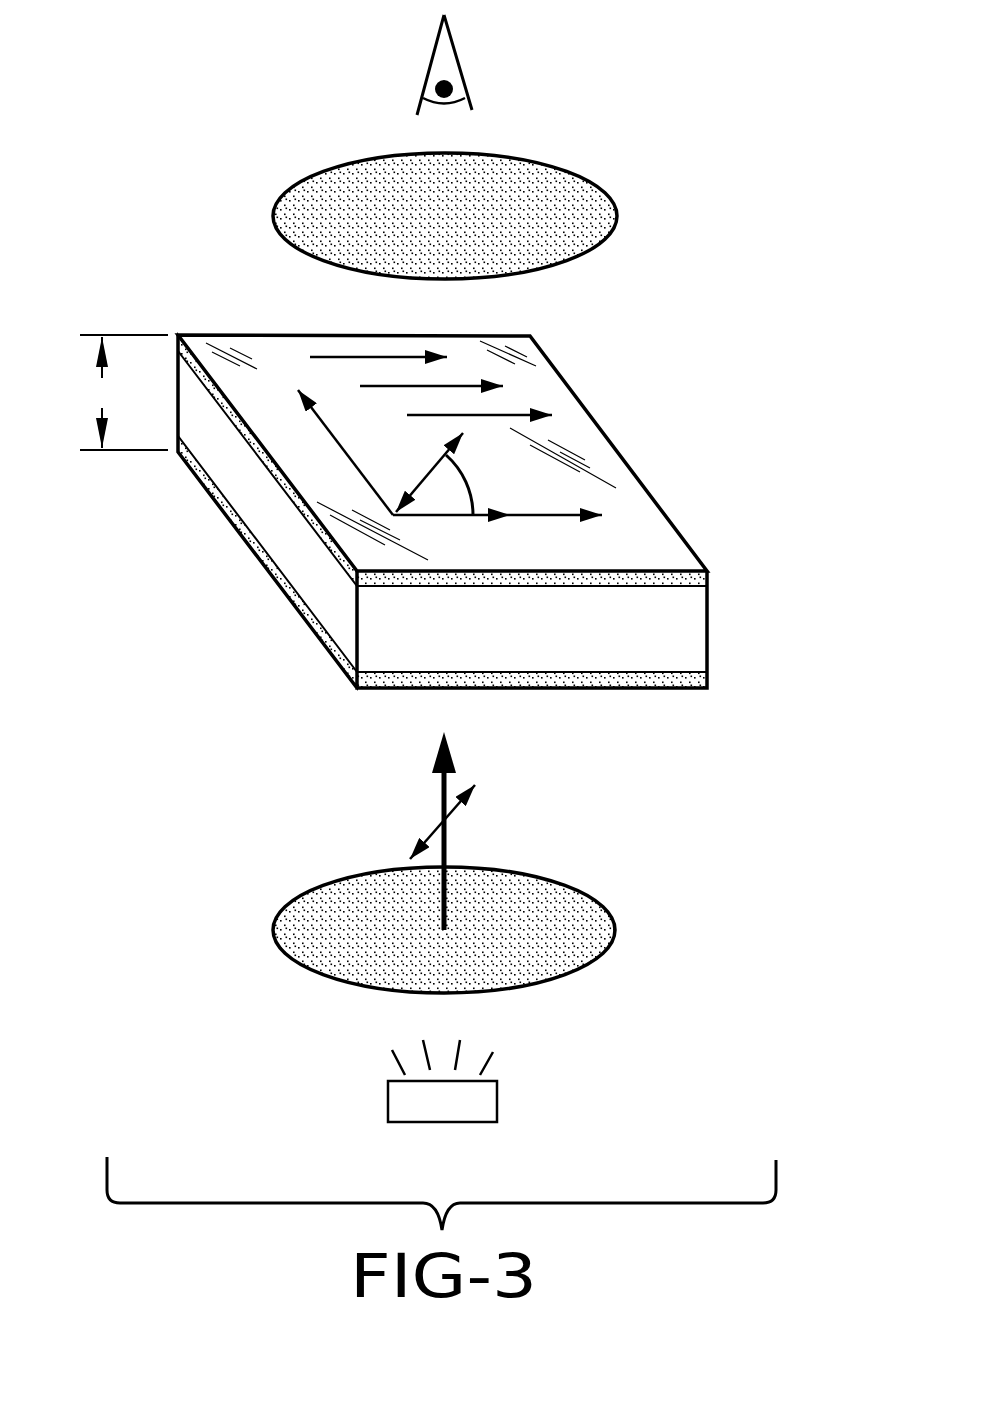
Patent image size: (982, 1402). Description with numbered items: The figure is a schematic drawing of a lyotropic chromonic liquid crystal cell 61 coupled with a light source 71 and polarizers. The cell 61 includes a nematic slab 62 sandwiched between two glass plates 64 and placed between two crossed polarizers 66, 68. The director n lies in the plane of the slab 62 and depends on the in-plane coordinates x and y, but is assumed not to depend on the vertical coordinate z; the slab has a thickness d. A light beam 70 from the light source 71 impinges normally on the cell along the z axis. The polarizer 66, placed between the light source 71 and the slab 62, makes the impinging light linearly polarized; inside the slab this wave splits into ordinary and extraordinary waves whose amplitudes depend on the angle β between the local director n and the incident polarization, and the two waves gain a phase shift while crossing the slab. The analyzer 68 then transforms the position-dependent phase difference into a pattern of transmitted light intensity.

The cell 61 is at (100, 236).
The nematic slab 62 is at (680, 630).
The glass plates 64 is at (700, 581).
The polarizer 66 is at (565, 920).
The analyzer 68 is at (540, 247).
The light beam 70 is at (445, 852).
The light source 71 is at (410, 1098).